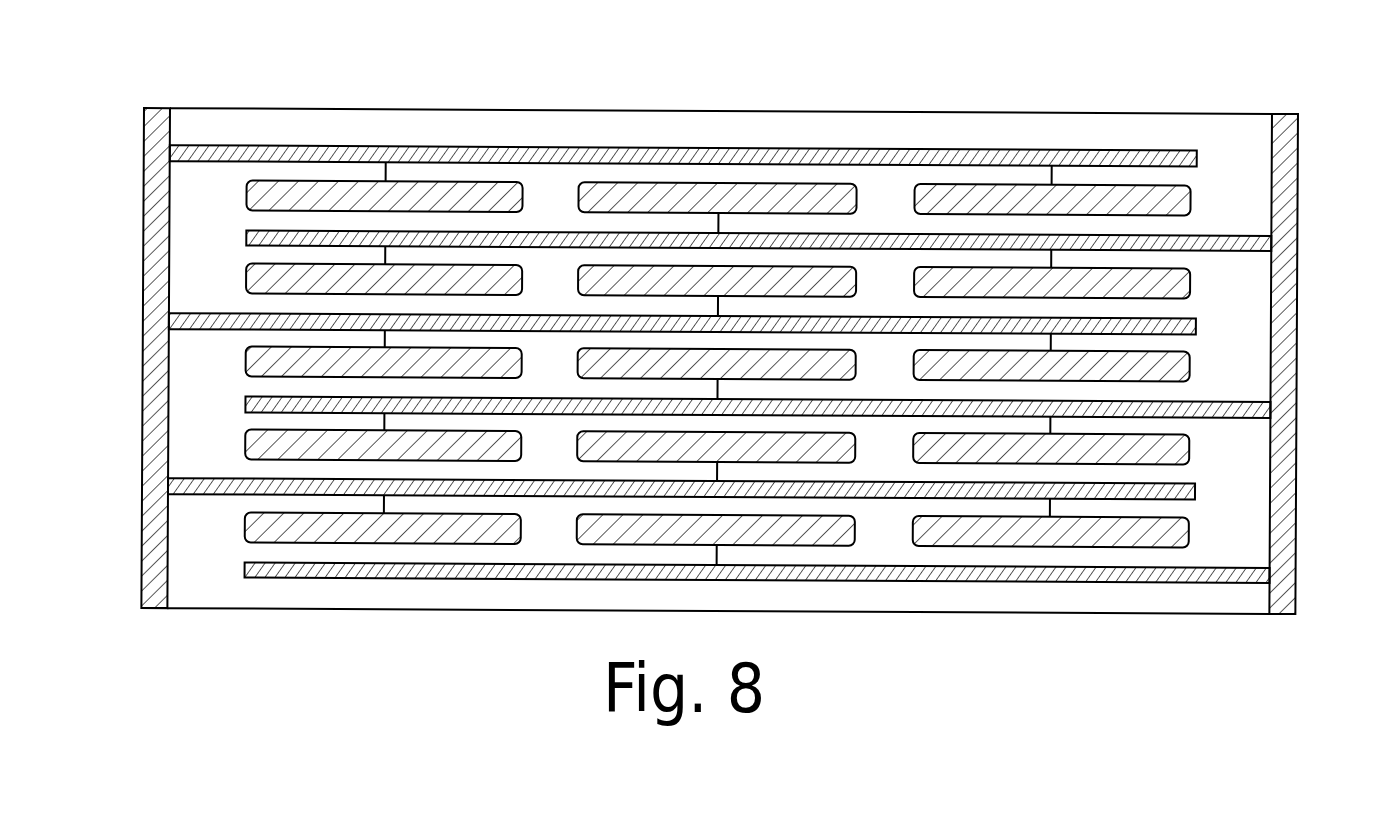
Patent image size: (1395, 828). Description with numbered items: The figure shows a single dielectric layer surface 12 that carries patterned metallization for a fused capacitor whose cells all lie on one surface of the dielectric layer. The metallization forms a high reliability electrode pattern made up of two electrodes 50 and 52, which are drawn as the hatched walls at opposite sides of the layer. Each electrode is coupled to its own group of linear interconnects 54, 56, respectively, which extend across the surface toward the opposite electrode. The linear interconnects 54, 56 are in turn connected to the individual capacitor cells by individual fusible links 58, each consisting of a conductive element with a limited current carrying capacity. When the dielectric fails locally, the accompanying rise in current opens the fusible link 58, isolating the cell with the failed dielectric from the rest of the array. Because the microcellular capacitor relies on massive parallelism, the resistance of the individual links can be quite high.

The dielectric layer surface 12 is at (803, 125).
The electrode 50 is at (142, 187).
The electrode 52 is at (1298, 163).
The linear interconnects 54 is at (280, 146).
The linear interconnects 56 is at (1225, 235).
The fusible links 58 is at (717, 225).